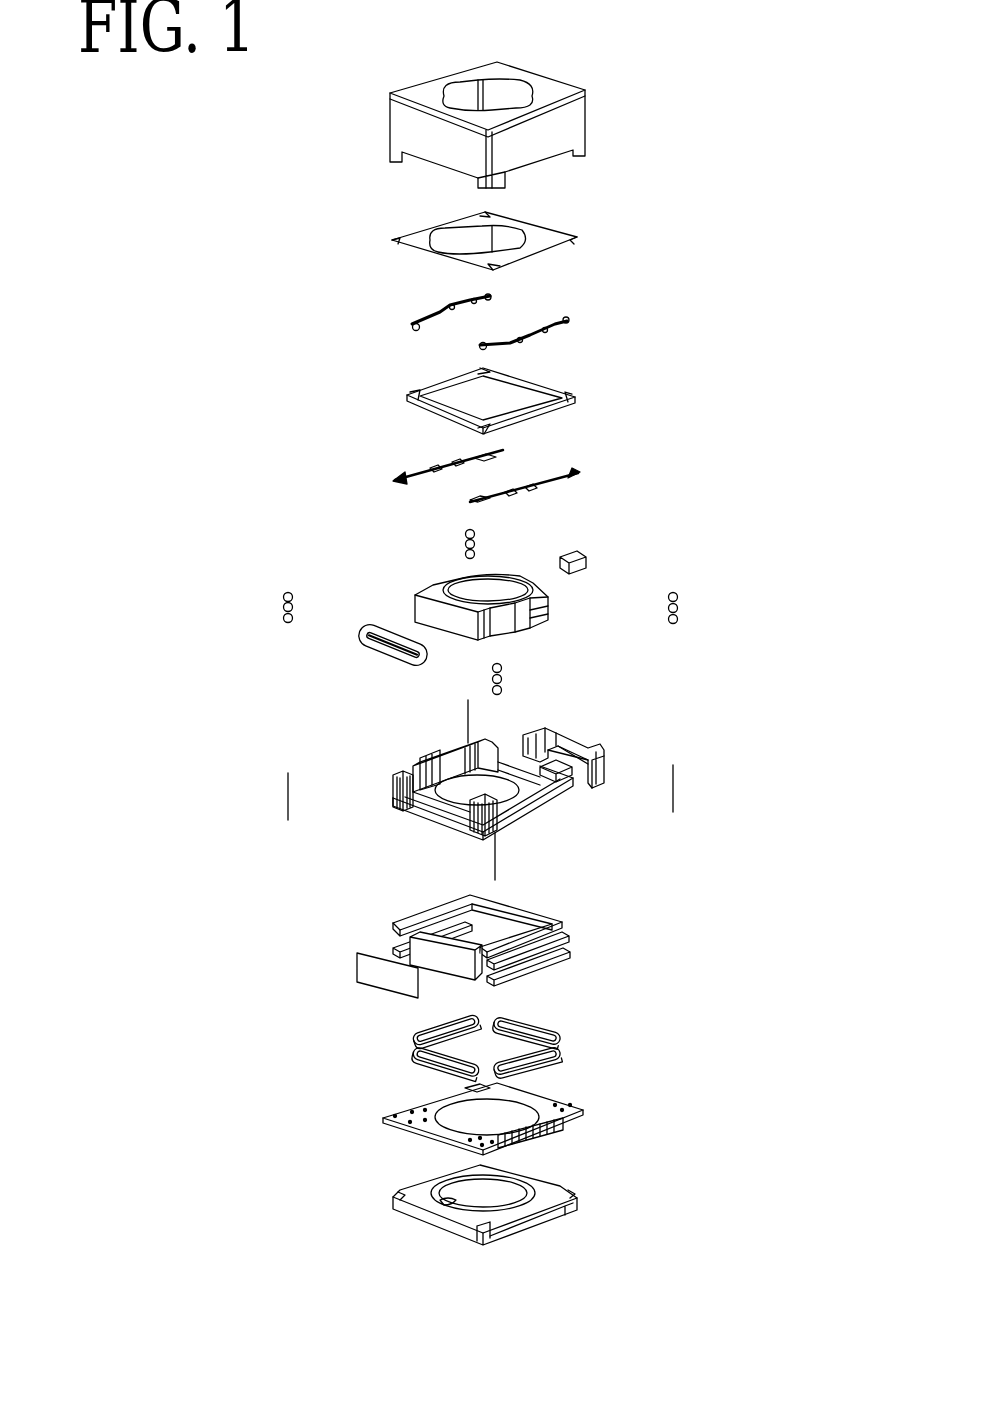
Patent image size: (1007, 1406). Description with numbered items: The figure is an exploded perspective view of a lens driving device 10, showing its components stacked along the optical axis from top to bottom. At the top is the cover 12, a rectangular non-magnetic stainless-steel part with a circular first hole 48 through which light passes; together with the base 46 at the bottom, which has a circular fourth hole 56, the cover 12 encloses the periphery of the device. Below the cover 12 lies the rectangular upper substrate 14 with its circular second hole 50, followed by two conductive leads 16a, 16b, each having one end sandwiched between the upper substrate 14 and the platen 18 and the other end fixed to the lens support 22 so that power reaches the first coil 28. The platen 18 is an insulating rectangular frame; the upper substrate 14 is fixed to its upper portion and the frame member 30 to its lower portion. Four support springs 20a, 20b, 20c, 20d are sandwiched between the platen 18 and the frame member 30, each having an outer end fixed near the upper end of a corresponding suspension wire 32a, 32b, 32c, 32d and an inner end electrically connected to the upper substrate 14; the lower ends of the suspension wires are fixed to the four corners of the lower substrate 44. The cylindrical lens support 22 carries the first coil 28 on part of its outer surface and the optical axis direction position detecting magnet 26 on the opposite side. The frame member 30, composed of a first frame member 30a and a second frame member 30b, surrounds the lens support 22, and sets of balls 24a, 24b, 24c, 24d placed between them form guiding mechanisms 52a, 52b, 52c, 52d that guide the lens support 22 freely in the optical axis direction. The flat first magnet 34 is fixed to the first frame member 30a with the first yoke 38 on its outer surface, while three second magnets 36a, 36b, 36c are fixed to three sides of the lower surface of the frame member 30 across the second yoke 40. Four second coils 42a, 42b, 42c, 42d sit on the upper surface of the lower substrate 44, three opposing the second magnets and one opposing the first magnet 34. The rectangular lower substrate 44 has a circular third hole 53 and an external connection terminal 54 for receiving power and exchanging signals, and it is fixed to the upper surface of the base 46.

The lens driving device 10 is at (688, 248).
The cover 12 is at (578, 112).
The upper substrate 14 is at (548, 236).
The lead 16a is at (440, 310).
The lead 16b is at (535, 340).
The platen 18 is at (445, 383).
The support spring 20a is at (398, 474).
The support spring 20b is at (486, 458).
The support spring 20c is at (575, 476).
The support spring 20d is at (495, 502).
The lens support 22 is at (545, 590).
The set of balls 24a is at (283, 612).
The set of balls 24b is at (465, 551).
The set of balls 24c is at (680, 618).
The set of balls 24d is at (503, 684).
The optical axis direction position detecting magnet 26 is at (588, 566).
The first coil 28 is at (378, 656).
The frame member 30 is at (492, 773).
The first frame member 30a is at (410, 754).
The second frame member 30b is at (604, 768).
The suspension wire 32a is at (288, 795).
The suspension wire 32b is at (470, 720).
The suspension wire 32c is at (673, 786).
The suspension wire 32d is at (497, 854).
The first magnet 34 is at (440, 966).
The second magnet 36a is at (440, 930).
The second magnet 36b is at (565, 940).
The second magnet 36c is at (555, 960).
The first yoke 38 is at (372, 977).
The second yoke 40 is at (520, 905).
The second coil 42a is at (414, 1050).
The second coil 42b is at (480, 1016).
The second coil 42c is at (548, 1031).
The second coil 42d is at (562, 1057).
The lower substrate 44 is at (478, 1135).
The base 46 is at (555, 1188).
The first hole 48 is at (446, 86).
The second hole 50 is at (440, 228).
The guiding mechanism 52a is at (283, 597).
The guiding mechanism 52b is at (465, 537).
The guiding mechanism 52c is at (679, 600).
The guiding mechanism 52d is at (504, 670).
The third hole 53 is at (450, 1106).
The external connection terminal 54 is at (565, 1132).
The fourth hole 56 is at (442, 1205).